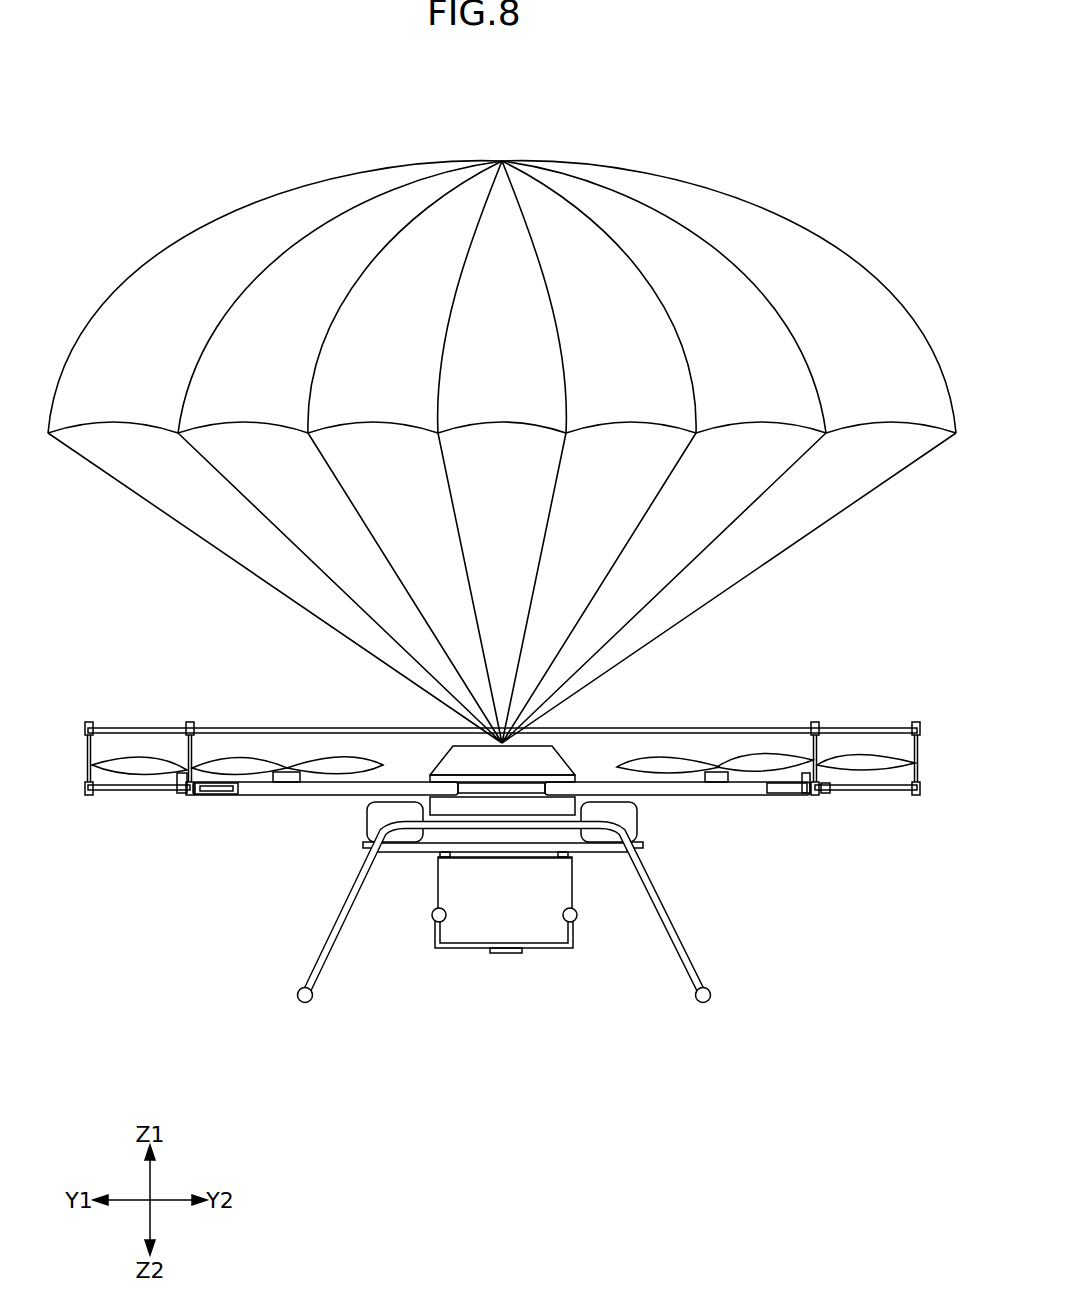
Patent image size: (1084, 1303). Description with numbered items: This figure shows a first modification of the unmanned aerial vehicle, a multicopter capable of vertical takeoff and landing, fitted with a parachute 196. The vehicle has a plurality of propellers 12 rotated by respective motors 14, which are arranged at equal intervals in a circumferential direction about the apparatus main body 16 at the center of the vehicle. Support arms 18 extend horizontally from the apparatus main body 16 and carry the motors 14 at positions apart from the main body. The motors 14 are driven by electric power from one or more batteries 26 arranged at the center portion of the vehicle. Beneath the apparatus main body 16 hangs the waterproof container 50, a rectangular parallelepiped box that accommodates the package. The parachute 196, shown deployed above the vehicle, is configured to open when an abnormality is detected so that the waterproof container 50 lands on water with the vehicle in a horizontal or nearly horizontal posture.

The parachute 196 is at (711, 195).
The propellers 12 is at (150, 760).
The motors 14 is at (293, 773).
The apparatus main body 16 is at (443, 747).
The support arms 18 is at (595, 787).
The batteries 26 is at (385, 815).
The waterproof container 50 is at (468, 952).